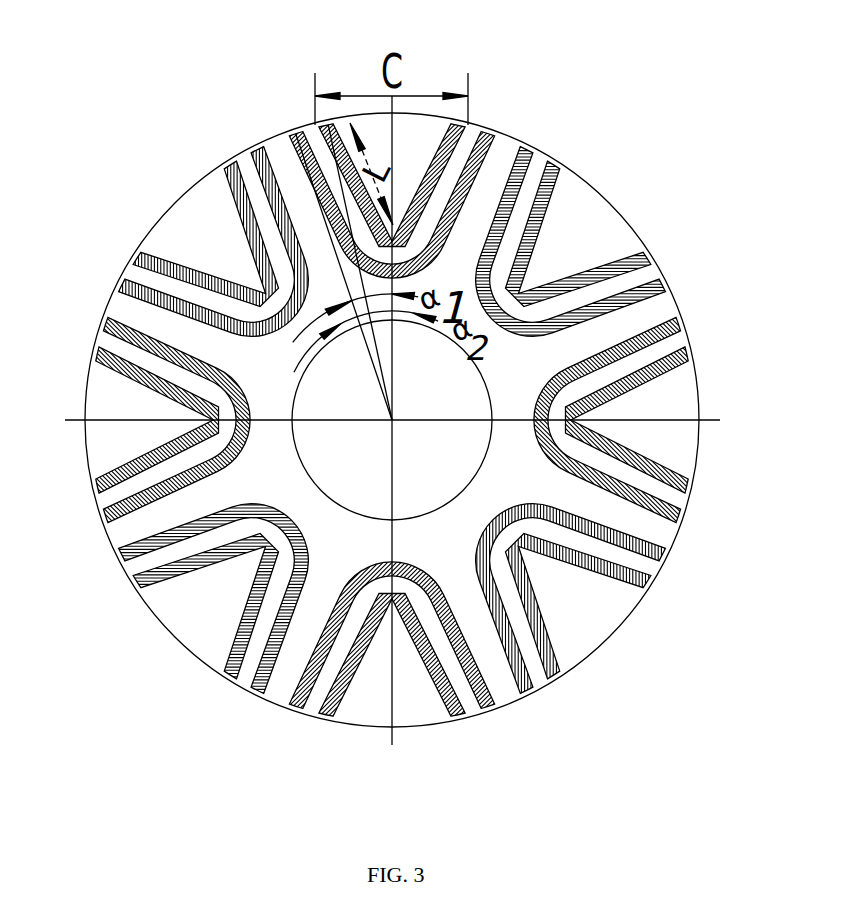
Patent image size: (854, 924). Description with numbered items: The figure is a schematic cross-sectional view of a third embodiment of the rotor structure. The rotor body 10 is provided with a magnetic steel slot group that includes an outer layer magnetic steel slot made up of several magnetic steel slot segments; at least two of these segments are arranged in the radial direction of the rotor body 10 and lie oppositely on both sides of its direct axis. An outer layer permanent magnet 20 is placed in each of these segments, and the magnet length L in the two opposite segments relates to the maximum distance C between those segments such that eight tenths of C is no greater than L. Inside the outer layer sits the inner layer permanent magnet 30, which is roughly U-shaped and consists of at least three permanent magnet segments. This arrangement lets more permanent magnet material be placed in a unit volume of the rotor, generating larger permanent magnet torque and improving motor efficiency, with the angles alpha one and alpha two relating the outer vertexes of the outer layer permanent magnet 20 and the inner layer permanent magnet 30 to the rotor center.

The rotor body 10 is at (588, 598).
The outer layer permanent magnet 20 is at (311, 125).
The inner layer permanent magnet 30 is at (310, 126).